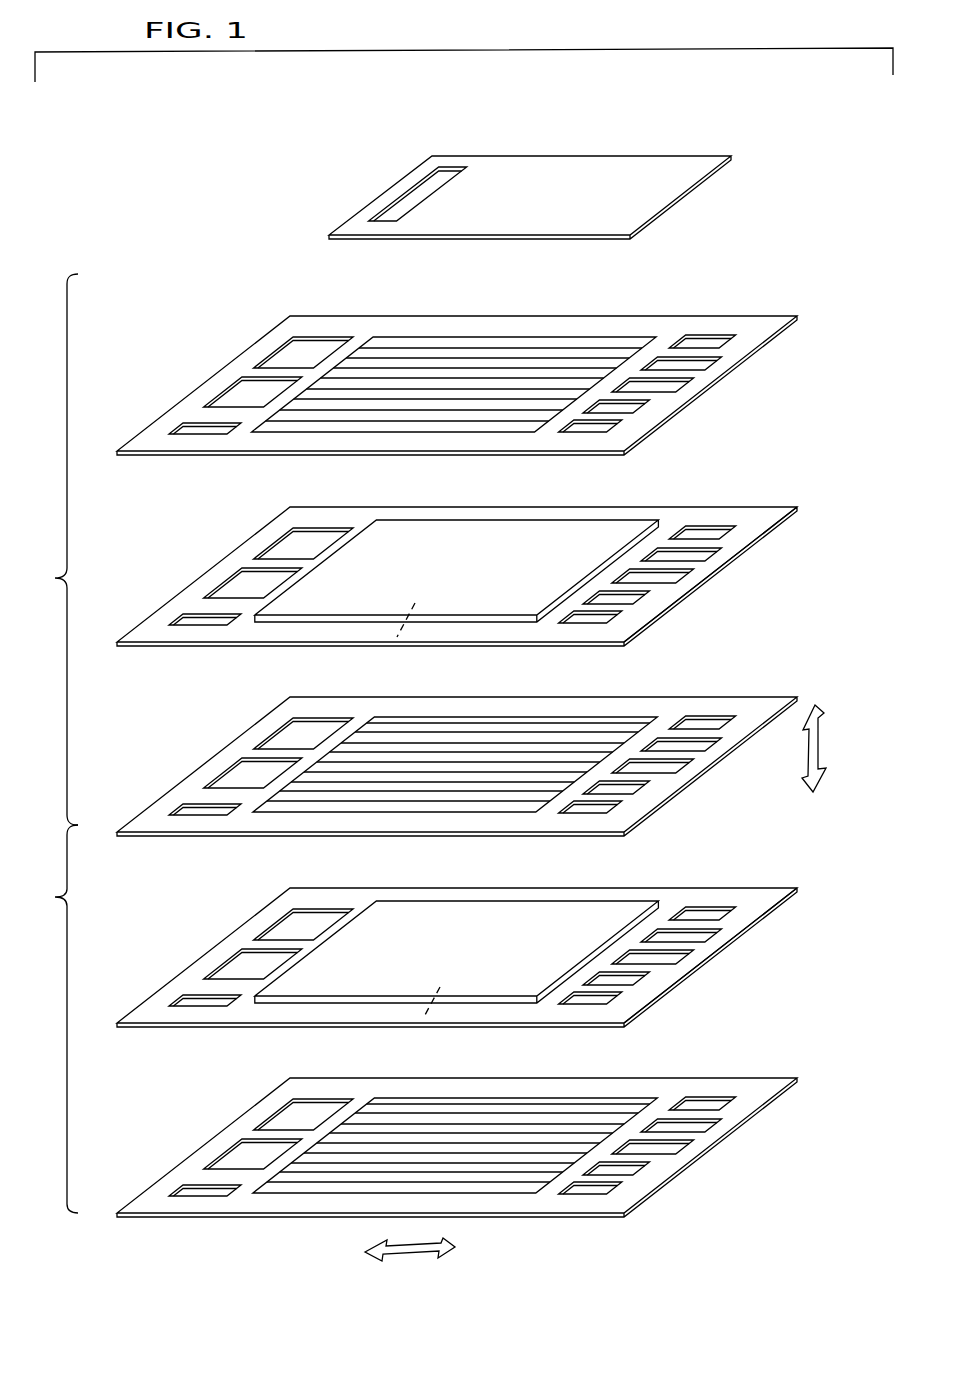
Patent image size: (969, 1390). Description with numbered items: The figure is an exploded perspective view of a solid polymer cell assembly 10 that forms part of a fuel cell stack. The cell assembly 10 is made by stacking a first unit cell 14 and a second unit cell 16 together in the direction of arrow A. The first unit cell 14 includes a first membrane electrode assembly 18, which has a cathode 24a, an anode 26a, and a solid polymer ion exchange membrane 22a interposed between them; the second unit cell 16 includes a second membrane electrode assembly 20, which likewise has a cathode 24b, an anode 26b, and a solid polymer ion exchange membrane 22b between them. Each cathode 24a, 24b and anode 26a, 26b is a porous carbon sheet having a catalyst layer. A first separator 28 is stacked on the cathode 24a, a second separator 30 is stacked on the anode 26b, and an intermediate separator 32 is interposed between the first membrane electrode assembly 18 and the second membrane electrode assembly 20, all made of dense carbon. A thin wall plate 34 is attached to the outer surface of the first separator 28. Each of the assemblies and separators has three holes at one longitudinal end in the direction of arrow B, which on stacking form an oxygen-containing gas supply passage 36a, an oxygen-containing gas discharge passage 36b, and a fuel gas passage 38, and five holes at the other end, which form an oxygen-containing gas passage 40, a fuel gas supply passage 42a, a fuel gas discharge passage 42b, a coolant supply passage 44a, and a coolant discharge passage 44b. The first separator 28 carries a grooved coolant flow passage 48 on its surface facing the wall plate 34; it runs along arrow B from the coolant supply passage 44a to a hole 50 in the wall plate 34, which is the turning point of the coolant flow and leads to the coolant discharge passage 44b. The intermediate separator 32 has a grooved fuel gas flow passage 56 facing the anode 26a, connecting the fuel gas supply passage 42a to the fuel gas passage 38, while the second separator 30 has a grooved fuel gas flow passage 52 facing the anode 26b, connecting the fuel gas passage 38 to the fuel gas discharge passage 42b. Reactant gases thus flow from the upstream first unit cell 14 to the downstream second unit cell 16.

The cell assembly 10 is at (209, 195).
The first unit cell 14 is at (46, 549).
The second unit cell 16 is at (46, 1019).
The first membrane electrode assembly 18 is at (765, 500).
The second membrane electrode assembly 20 is at (765, 881).
The solid polymer ion exchange membrane 22a is at (657, 601).
The solid polymer ion exchange membrane 22b is at (658, 980).
The cathode 24a is at (476, 548).
The cathode 24b is at (530, 915).
The anode 26a is at (397, 637).
The anode 26b is at (425, 1015).
The first separator 28 is at (765, 310).
The second separator 30 is at (770, 1070).
The intermediate separator 32 is at (765, 690).
The wall plate 34 is at (549, 150).
The oxygen-containing gas supply passage 36a is at (288, 352).
The oxygen-containing gas discharge passage 36b is at (238, 398).
The fuel gas passage 38 is at (183, 425).
The oxygen-containing gas passage 40 is at (610, 425).
The fuel gas supply passage 42a is at (632, 407).
The fuel gas discharge passage 42b is at (705, 337).
The coolant supply passage 44a is at (668, 388).
The coolant discharge passage 44b is at (697, 366).
The coolant flow passage 48 is at (470, 350).
The hole 50 is at (410, 196).
The fuel gas flow passage 52 is at (495, 1112).
The fuel gas flow passage 56 is at (457, 737).
The stacking direction A is at (827, 748).
The longitudinal direction B is at (410, 1262).